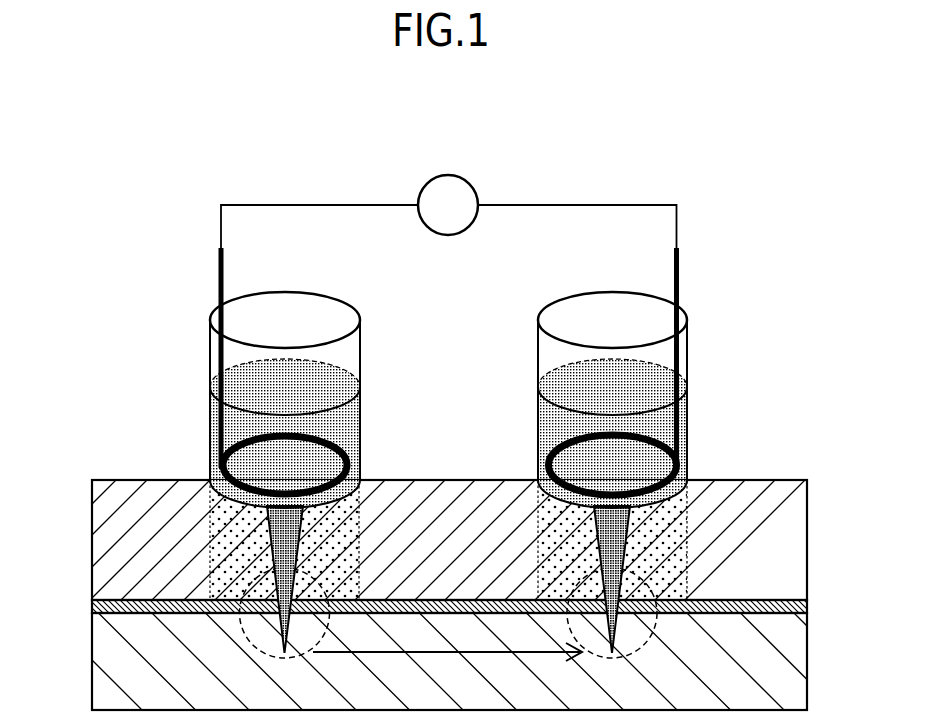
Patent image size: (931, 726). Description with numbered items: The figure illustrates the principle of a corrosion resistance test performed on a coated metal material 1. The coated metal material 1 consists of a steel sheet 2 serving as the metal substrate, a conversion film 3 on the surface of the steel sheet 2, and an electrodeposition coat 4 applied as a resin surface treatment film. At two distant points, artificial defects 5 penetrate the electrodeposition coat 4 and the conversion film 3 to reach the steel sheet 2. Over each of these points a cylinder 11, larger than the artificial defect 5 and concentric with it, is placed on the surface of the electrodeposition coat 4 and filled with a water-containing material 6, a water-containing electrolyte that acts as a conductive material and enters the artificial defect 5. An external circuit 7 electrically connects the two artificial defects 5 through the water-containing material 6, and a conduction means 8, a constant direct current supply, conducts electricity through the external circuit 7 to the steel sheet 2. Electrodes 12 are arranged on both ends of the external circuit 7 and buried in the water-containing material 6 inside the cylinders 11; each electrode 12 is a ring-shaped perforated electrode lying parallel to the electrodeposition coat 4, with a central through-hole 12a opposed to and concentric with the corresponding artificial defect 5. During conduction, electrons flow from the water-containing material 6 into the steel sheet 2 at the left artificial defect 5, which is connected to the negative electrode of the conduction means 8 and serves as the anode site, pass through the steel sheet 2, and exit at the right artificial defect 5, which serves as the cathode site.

The coated metal material 1 is at (815, 378).
The steel sheet 2 is at (115, 672).
The conversion film 3 is at (115, 605).
The electrodeposition coat 4 is at (115, 500).
The artificial defects 5 is at (230, 546).
The water-containing material 6 is at (323, 375).
The external circuit 7 is at (584, 204).
The conduction means 8 is at (449, 175).
The cylinders 11 is at (329, 292).
The electrodes 12 is at (285, 432).
The through-hole 12a is at (335, 455).